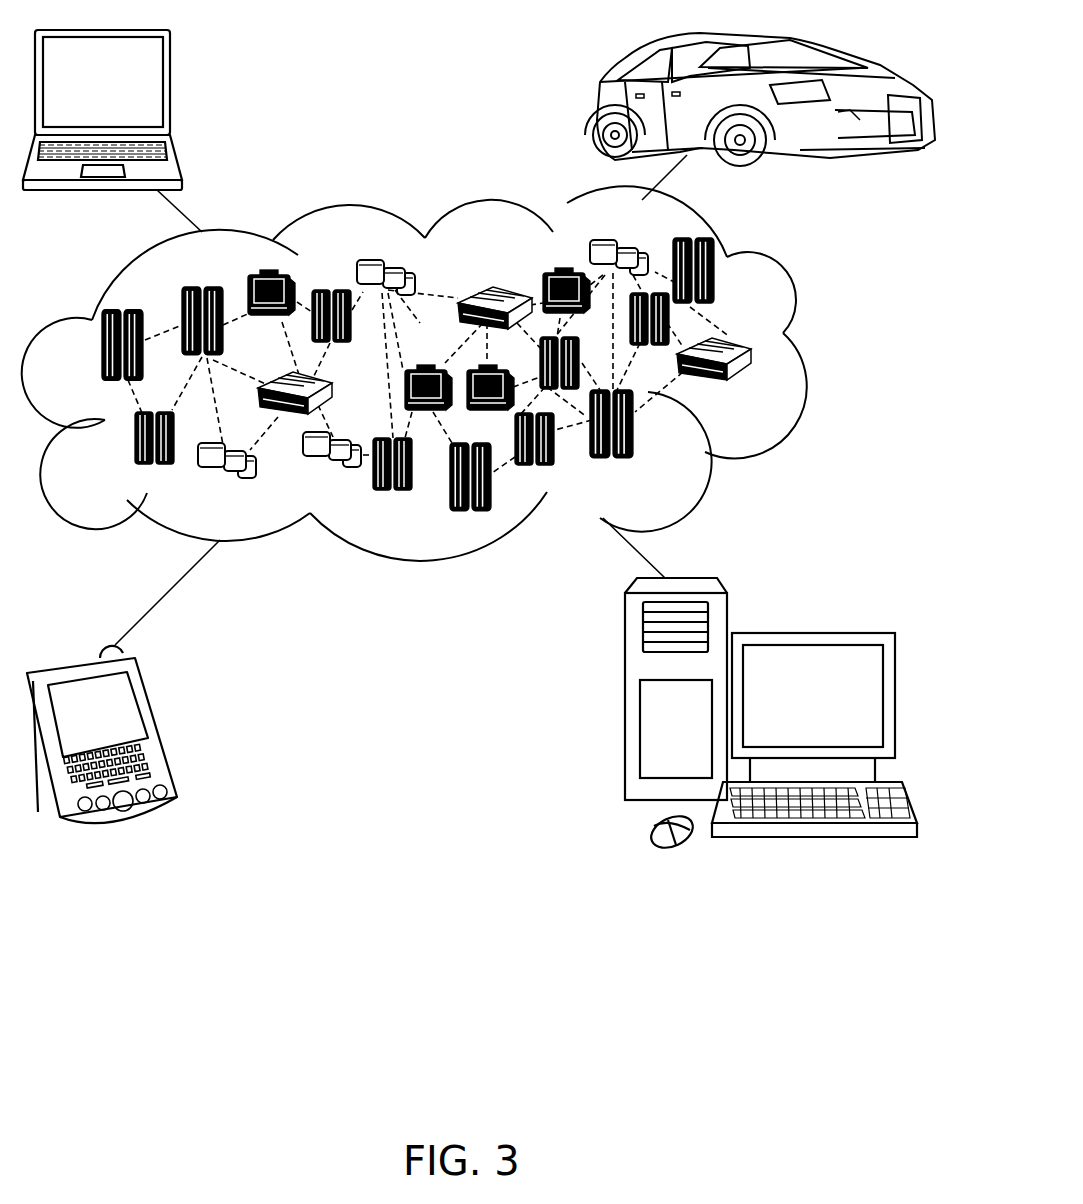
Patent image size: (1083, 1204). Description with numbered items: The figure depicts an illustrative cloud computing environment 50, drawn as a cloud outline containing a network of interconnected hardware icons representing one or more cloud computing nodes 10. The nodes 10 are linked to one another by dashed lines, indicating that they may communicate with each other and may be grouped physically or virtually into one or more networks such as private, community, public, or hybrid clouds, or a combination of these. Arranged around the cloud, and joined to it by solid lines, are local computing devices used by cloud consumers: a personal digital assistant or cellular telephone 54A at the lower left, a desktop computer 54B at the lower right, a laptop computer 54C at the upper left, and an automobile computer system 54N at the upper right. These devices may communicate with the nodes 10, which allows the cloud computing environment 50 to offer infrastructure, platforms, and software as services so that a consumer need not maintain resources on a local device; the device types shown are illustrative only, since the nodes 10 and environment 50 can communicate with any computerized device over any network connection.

The cloud computing nodes 10 is at (755, 383).
The cloud computing environment 50 is at (812, 353).
The personal digital assistant or cellular telephone 54A is at (160, 727).
The desktop computer 54B is at (810, 632).
The laptop computer 54C is at (172, 90).
The automobile computer system 54N is at (595, 105).